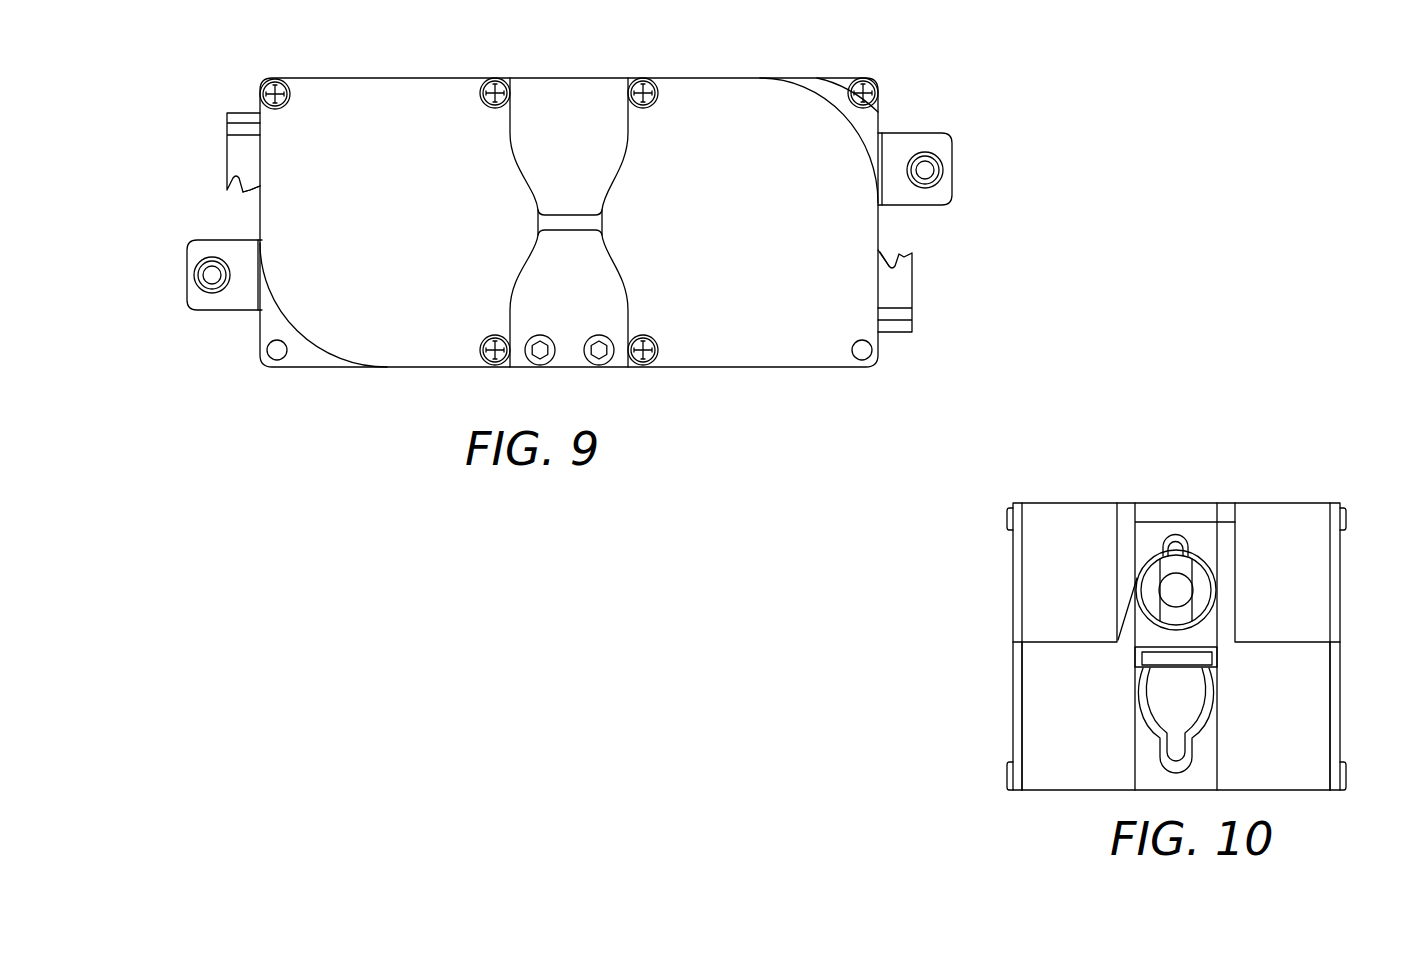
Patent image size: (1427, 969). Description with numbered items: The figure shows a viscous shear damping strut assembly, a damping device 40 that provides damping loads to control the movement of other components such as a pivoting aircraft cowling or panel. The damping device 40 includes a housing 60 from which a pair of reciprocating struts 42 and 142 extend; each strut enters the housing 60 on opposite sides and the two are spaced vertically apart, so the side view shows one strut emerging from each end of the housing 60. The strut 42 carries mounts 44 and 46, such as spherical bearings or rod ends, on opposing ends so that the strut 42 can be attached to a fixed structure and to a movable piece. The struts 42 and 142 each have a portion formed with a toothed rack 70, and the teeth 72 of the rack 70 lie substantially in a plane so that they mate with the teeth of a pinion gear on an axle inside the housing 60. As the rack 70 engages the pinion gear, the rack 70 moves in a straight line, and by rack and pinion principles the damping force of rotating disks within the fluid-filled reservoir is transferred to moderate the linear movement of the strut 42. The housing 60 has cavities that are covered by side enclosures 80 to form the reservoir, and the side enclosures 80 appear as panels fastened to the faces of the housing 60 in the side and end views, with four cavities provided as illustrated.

In FIG. 9, the damping device 40 is at (880, 88).
In FIG. 10, the damping device 40 is at (1253, 513).
In FIG. 9, the strut 42 is at (237, 300).
In FIG. 10, the strut 42 is at (1175, 570).
In FIG. 9, the mount 44 is at (212, 275).
In FIG. 9, the mount 46 is at (925, 170).
In FIG. 9, the housing 60 is at (268, 84).
In FIG. 10, the housing 60 is at (1323, 740).
In FIG. 9, the toothed rack 70 is at (228, 195).
In FIG. 9, the teeth 72 is at (255, 190).
In FIG. 9, the side enclosure 80 is at (400, 325).
In FIG. 10, the side enclosure 80 is at (1340, 565).
In FIG. 9, the strut 142 is at (937, 143).